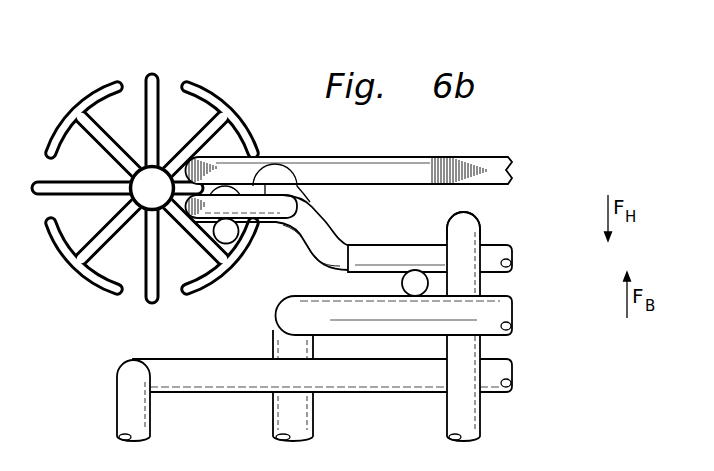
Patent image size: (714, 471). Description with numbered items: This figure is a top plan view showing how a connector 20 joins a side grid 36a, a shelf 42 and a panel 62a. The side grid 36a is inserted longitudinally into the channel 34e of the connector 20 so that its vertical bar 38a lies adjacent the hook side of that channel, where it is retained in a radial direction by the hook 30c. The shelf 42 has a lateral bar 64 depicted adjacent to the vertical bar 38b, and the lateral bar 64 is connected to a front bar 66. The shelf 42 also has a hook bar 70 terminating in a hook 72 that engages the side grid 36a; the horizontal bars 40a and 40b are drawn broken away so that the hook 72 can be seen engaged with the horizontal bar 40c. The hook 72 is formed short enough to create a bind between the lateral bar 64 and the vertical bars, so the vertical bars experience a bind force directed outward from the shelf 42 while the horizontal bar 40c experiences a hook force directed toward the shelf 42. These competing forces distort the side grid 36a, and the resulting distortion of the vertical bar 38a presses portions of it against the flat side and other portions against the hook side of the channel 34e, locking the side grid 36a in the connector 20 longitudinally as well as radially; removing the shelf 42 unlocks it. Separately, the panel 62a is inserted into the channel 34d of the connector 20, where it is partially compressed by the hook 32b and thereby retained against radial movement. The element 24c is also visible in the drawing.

The connector 20 is at (174, 73).
The hook 32b is at (257, 156).
The channel 34d is at (265, 153).
The horizontal bar 40b is at (345, 244).
The panel 62a is at (491, 160).
The spring loop 24c is at (310, 202).
The horizontal bar 40a is at (213, 224).
The channel 34e is at (264, 224).
The vertical bar 38a is at (226, 245).
The hook 30c is at (255, 248).
The front bar 66 is at (116, 404).
The side grid 36a is at (503, 244).
The horizontal bar 40c is at (431, 244).
The vertical bar 38b is at (402, 282).
The hook bar 70 is at (449, 420).
The hook 72 is at (478, 220).
The lateral bar 64 is at (276, 312).
The shelf 42 is at (200, 324).